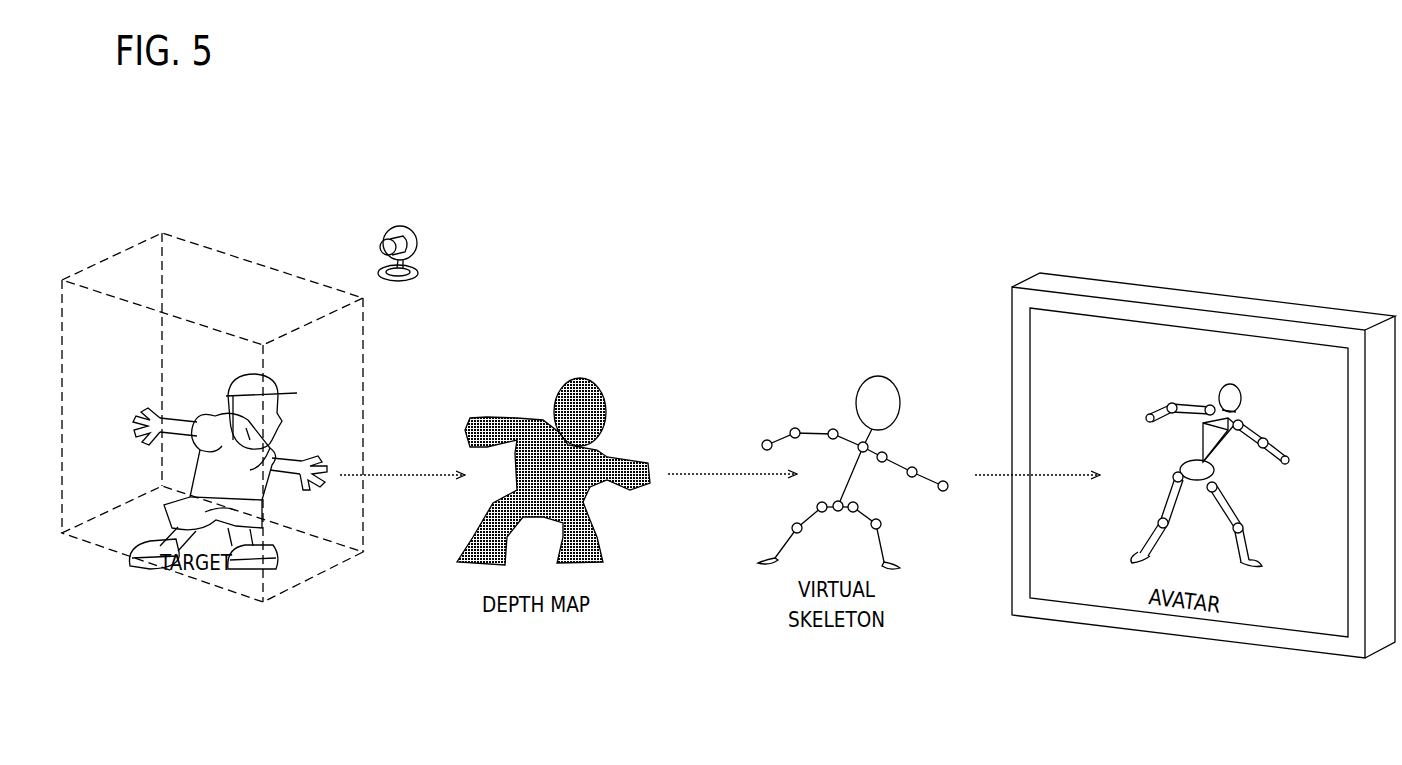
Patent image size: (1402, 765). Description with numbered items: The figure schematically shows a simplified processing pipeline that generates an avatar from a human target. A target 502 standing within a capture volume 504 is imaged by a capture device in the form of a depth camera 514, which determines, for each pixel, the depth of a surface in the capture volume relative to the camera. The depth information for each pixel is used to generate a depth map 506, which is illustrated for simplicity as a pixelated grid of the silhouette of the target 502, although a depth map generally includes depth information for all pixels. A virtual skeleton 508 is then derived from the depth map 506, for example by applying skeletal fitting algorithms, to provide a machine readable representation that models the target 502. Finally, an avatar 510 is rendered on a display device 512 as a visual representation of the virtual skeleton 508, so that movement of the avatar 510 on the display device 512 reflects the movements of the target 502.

The target 502 is at (238, 484).
The capture volume 504 is at (258, 263).
The depth map 506 is at (568, 382).
The virtual skeleton 508 is at (893, 414).
The avatar 510 is at (1230, 385).
The display device 512 is at (1325, 531).
The depth camera 514 is at (415, 233).